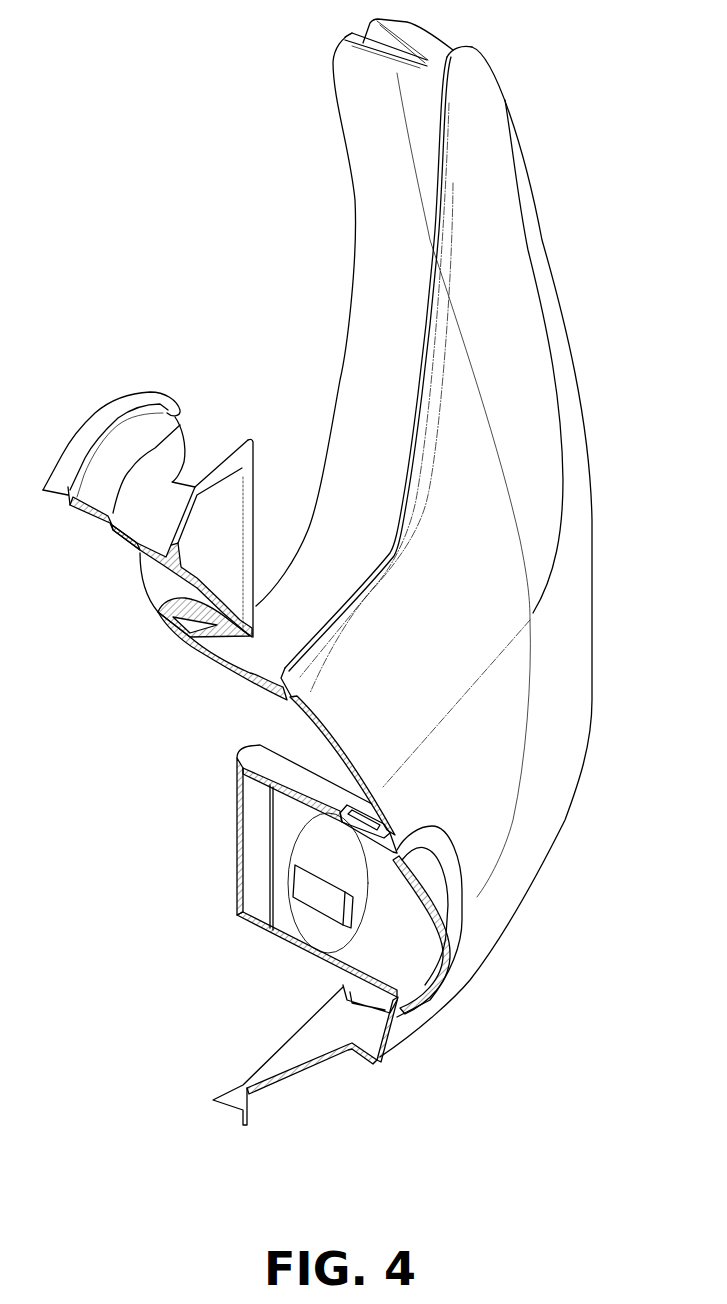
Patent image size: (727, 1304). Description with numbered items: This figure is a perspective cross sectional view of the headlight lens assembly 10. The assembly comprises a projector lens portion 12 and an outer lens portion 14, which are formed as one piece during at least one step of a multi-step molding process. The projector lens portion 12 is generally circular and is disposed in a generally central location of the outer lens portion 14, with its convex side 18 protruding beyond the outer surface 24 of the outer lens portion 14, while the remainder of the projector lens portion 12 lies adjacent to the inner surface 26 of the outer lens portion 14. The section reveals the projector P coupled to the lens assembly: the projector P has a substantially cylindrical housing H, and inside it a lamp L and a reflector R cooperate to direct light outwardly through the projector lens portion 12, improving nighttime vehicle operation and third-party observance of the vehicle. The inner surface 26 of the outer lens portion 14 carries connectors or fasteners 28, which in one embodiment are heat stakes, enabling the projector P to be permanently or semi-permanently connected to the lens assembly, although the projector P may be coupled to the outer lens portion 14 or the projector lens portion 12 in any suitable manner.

The headlight lens assembly 10 is at (572, 807).
The projector lens portion 12 is at (440, 955).
The outer lens portion 14 is at (590, 705).
The convex side 18 is at (443, 905).
The outer surface 24 is at (555, 647).
The inner surface 26 is at (323, 1038).
The fasteners 28 is at (377, 830).
The housing H is at (237, 825).
The lamp L is at (348, 903).
The projector P is at (255, 913).
The reflector R is at (288, 928).